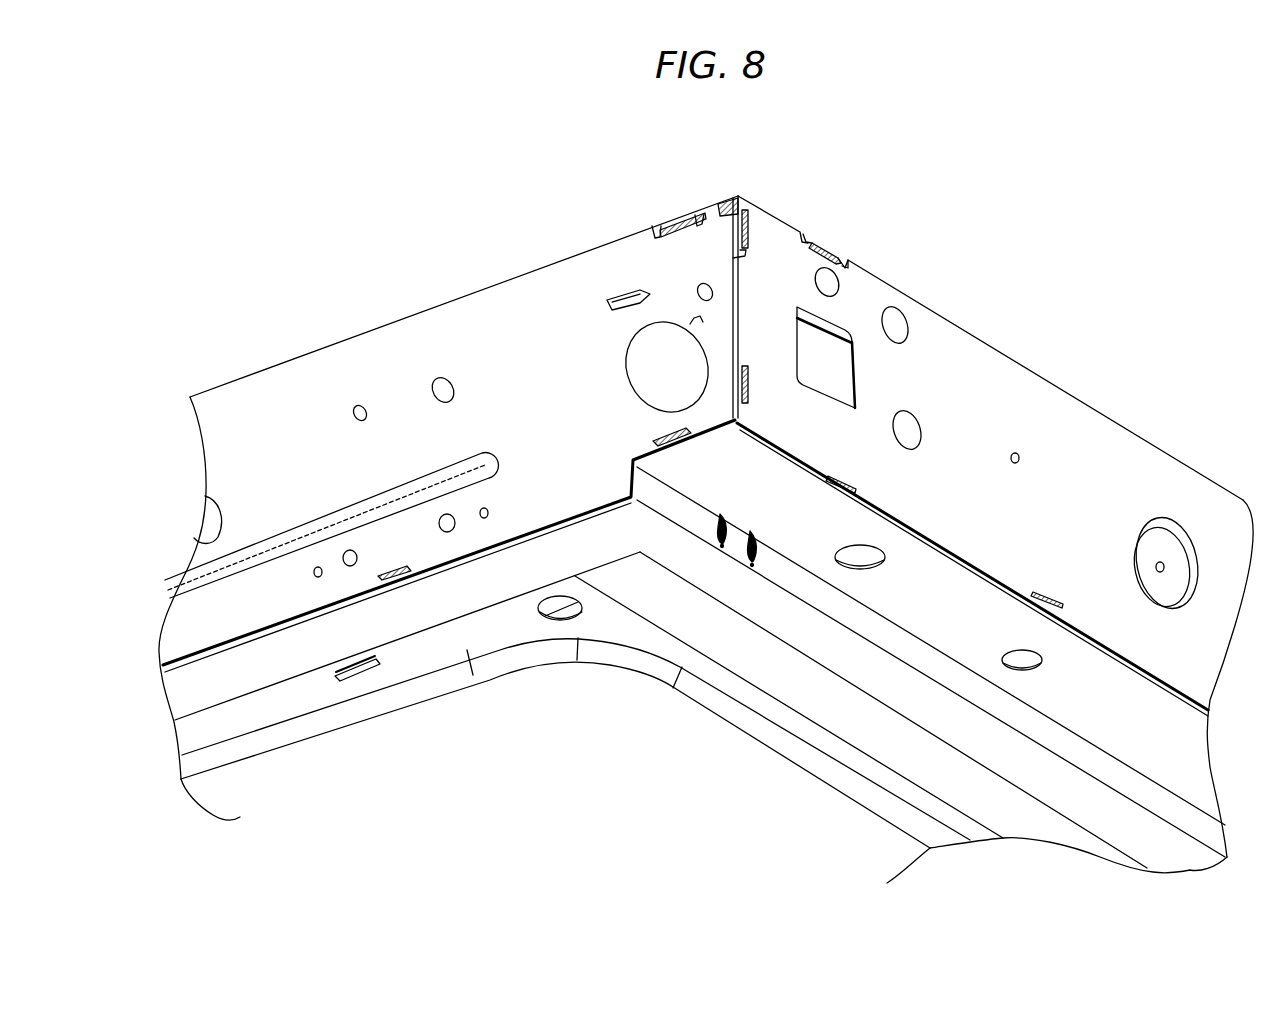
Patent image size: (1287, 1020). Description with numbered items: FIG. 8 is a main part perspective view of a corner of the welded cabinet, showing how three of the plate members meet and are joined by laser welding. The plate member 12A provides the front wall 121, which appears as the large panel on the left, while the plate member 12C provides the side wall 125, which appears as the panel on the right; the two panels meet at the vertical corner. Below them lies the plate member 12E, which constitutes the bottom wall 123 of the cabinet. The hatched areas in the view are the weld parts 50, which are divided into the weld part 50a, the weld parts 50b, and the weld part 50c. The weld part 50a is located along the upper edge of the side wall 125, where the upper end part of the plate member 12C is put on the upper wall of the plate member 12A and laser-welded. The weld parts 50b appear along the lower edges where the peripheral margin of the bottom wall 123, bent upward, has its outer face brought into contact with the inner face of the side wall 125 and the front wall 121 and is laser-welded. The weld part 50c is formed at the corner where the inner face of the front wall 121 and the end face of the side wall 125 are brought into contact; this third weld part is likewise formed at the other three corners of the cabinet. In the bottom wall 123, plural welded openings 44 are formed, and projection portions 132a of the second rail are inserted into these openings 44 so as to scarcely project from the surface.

The plate member 12A is at (281, 346).
The front wall 121 is at (473, 308).
The plate member 12C is at (1011, 342).
The side wall 125 is at (1047, 392).
The plate member 12E is at (533, 752).
The bottom wall 123 is at (585, 740).
The welded opening 44 is at (348, 683).
The projection portion 132a is at (375, 668).
The weld part 50 is at (751, 530).
The weld part 50a is at (826, 245).
The weld part 50b is at (654, 437).
The third weld part 50c is at (676, 215).